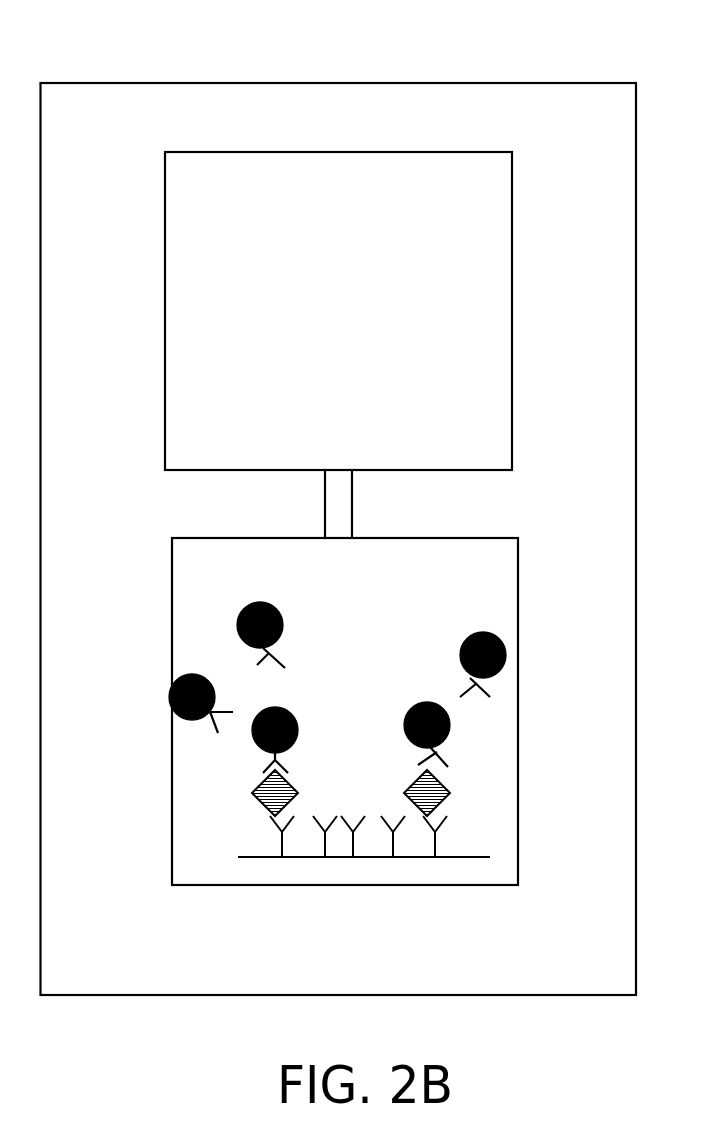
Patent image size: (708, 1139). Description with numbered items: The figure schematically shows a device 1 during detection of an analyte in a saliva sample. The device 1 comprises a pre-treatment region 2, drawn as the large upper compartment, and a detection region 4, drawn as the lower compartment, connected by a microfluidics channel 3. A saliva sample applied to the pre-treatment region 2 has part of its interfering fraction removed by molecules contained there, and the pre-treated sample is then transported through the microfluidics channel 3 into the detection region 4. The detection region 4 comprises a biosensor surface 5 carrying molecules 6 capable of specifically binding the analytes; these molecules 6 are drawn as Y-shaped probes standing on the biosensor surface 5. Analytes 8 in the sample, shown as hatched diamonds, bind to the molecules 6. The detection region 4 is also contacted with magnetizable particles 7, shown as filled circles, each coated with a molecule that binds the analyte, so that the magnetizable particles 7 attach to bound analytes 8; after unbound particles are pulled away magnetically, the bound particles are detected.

The device 1 is at (497, 82).
The pre-treatment region 2 is at (512, 287).
The microfluidics channel 3 is at (352, 493).
The detection region 4 is at (518, 710).
The biosensor surface 5 is at (333, 857).
The molecules capable of specifically binding the analytes 6 is at (280, 838).
The magnetizable particles 7 is at (232, 630).
The analytes 8 is at (443, 780).